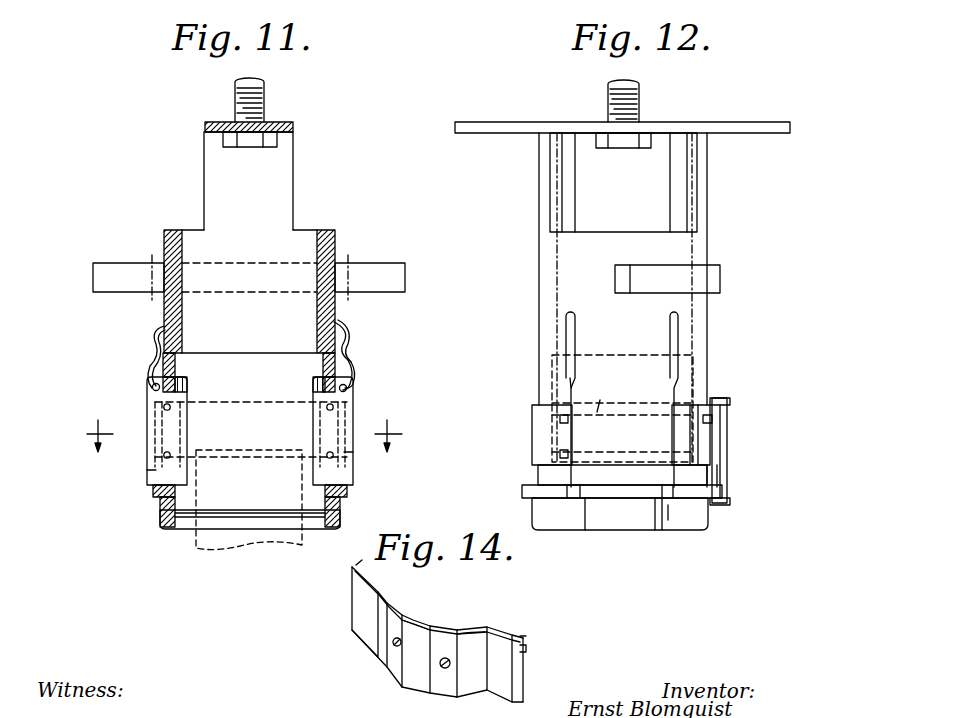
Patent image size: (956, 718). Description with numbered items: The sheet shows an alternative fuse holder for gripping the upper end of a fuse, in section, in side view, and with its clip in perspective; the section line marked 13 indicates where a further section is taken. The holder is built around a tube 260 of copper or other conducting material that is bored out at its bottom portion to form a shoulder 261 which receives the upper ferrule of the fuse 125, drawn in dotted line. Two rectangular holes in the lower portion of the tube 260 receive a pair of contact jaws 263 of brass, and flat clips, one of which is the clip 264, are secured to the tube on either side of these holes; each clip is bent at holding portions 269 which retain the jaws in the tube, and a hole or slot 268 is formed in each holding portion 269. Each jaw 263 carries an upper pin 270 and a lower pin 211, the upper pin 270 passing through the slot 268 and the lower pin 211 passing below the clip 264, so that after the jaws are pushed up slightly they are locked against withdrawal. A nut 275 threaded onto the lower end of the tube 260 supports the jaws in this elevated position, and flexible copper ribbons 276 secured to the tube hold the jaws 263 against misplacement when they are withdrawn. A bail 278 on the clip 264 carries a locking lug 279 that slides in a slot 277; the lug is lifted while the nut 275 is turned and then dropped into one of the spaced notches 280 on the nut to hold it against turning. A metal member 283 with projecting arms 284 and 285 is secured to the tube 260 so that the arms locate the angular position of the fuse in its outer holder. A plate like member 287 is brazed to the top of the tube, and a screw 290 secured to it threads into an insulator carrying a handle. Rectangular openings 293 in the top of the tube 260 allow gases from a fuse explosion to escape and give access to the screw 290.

In FIG. 11, the screw 290 is at (261, 112).
In FIG. 12, the screw 290 is at (640, 93).
In FIG. 11, the plate like member 287 is at (295, 127).
In FIG. 12, the plate like member 287 is at (768, 114).
In FIG. 11, the rectangular openings 293 is at (305, 226).
In FIG. 12, the rectangular openings 293 is at (662, 193).
In FIG. 11, the tube 260 is at (165, 310).
In FIG. 12, the tube 260 is at (545, 257).
In FIG. 11, the projecting arm 284 is at (135, 256).
In FIG. 11, the metal member 283 is at (256, 281).
In FIG. 12, the metal member 283 is at (721, 289).
In FIG. 12, the projecting arm 285 is at (621, 276).
In FIG. 11, the flexible copper ribbons 276 is at (157, 344).
In FIG. 12, the flexible copper ribbons 276 is at (673, 328).
In FIG. 11, the shoulder 261 is at (345, 353).
In FIG. 12, the shoulder 261 is at (552, 362).
In FIG. 11, the contact jaws 263 is at (150, 401).
In FIG. 12, the contact jaws 263 is at (622, 379).
In FIG. 11, the upper pin 270 is at (171, 405).
In FIG. 12, the upper pin 270 is at (595, 397).
In FIG. 11, the lower hole 211 is at (163, 456).
In FIG. 12, the lower hole 211 is at (558, 456).
In FIG. 11, the hole or slot 268 is at (153, 421).
In FIG. 12, the hole or slot 268 is at (560, 421).
In FIG. 14, the hole or slot 268 is at (526, 648).
In FIG. 11, the bent in holding portions 269 is at (158, 472).
In FIG. 14, the bent in holding portions 269 is at (364, 566).
In FIG. 11, the nut 275 is at (338, 517).
In FIG. 12, the nut 275 is at (540, 511).
In FIG. 11, the fuse 125 is at (195, 546).
In FIG. 12, the bail 278 is at (728, 445).
In FIG. 14, the bail 278 is at (440, 631).
In FIG. 12, the locking lug 279 is at (720, 481).
In FIG. 12, the notches 280 is at (668, 498).
In FIG. 14, the flat clip 264 is at (395, 612).
In FIG. 14, the slot 277 is at (431, 623).
In FIG. 11, the section line 13- 13 is at (245, 436).